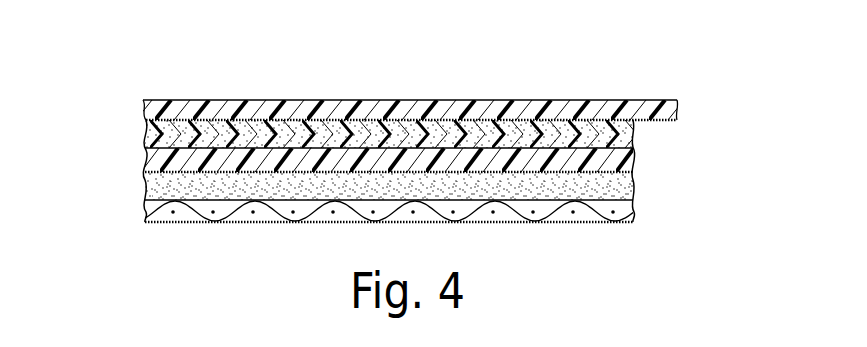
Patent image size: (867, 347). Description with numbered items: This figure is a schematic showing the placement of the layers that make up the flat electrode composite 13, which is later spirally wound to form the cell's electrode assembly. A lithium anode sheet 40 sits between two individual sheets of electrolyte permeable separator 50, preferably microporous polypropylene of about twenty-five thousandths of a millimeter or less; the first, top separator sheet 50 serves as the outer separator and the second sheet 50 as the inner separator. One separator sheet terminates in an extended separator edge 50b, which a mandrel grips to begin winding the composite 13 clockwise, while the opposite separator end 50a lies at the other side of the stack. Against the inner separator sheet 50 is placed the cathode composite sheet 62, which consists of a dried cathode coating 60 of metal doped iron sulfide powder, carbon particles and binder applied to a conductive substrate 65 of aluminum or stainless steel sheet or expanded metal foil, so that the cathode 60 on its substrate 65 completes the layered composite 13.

The flat electrode composite 13 is at (202, 68).
The lithium anode sheet 40 is at (625, 133).
The separator sheet 50 is at (616, 108).
The first film layer portion 50a is at (145, 163).
The extended separator edge 50b is at (678, 108).
The cathode coating 60 is at (628, 189).
The cathode composite sheet 62 is at (141, 170).
The conductive substrate 65 is at (561, 219).